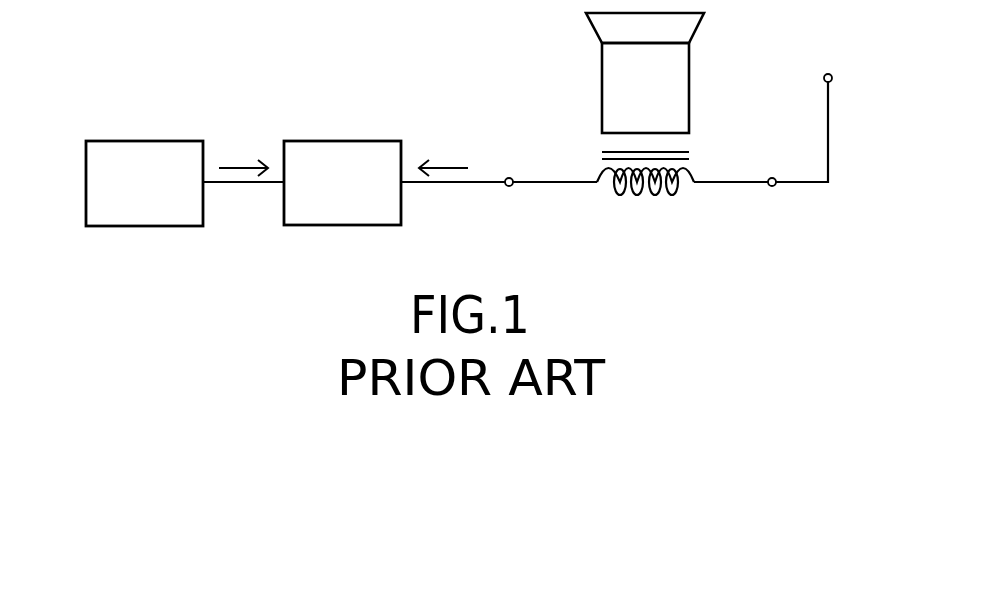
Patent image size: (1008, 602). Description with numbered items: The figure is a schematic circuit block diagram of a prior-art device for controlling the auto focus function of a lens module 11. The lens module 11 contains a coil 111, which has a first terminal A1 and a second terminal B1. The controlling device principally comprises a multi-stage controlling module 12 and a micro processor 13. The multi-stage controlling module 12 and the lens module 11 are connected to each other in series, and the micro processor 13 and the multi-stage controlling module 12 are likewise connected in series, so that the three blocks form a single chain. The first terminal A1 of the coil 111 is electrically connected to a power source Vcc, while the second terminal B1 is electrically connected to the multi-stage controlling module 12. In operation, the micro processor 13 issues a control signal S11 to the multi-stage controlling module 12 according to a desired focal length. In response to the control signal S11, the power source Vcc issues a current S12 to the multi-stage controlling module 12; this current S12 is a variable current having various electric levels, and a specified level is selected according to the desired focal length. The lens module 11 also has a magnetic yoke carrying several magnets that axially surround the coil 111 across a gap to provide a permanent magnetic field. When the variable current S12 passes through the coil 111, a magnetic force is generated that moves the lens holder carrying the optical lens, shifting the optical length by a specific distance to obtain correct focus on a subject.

The lens module 11 is at (681, 93).
The coil 111 is at (657, 198).
The multi-stage controlling module 12 is at (348, 149).
The micro processor 13 is at (150, 151).
The control signal S11 is at (237, 162).
The current S12 is at (445, 162).
The first terminal A1 is at (776, 185).
The second terminal B1 is at (513, 185).
The power source Vcc is at (828, 60).